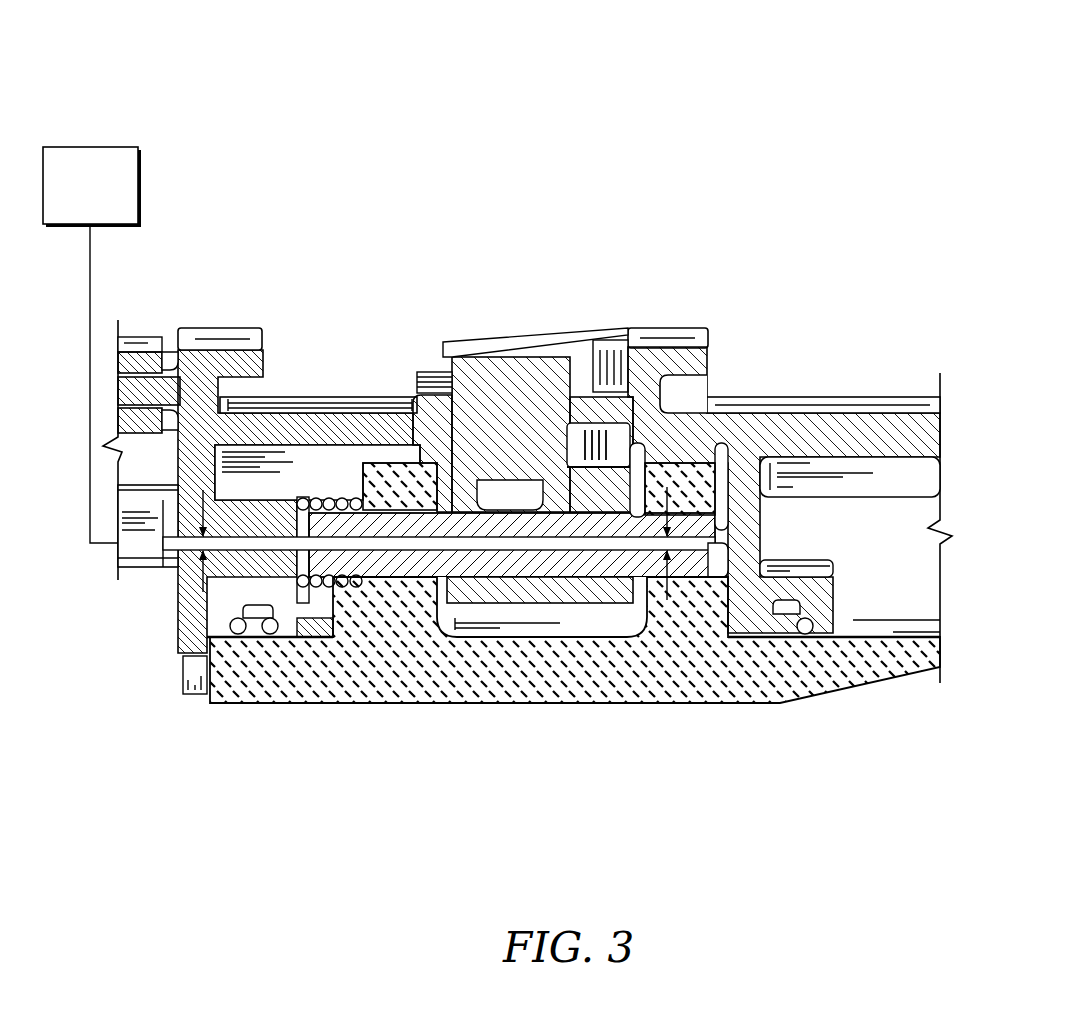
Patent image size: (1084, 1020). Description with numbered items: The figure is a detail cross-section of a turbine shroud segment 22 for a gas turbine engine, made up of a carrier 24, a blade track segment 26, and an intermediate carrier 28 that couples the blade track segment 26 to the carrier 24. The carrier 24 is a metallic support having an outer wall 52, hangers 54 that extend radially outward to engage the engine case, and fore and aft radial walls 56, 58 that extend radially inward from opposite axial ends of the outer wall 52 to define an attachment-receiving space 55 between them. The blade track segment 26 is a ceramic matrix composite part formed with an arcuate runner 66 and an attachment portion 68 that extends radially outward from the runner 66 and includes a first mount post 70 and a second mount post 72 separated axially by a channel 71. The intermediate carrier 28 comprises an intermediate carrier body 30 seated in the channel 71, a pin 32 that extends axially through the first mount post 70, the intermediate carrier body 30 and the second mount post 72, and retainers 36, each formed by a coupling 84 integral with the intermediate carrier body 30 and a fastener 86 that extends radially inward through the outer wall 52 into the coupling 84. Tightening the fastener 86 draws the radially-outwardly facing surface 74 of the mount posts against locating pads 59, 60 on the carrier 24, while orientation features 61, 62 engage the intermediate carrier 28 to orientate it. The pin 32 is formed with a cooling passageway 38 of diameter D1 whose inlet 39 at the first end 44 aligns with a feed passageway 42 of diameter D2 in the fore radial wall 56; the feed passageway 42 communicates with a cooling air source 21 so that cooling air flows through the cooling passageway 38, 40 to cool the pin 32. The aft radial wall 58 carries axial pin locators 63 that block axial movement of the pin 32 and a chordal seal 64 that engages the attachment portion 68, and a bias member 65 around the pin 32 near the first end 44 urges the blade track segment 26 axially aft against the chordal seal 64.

The cooling air source 21 is at (87, 147).
The turbine shroud segment 22 is at (206, 92).
The carrier 24 is at (262, 266).
The blade track segment 26 is at (334, 791).
The intermediate carrier 28 is at (395, 237).
The intermediate carrier body 30 is at (589, 446).
The pin 32 is at (350, 495).
The retainer 36 is at (510, 301).
The cooling passageway 38 is at (385, 552).
The inlet 39 is at (327, 545).
The cooling passageway 40 is at (693, 543).
The feed passageway 42 is at (150, 545).
The first end 44 is at (305, 496).
The outer wall 52 is at (349, 395).
The hanger 54 is at (243, 325).
The attachment-receiving space 55 is at (327, 462).
The fore radial wall 56 is at (177, 453).
The aft radial wall 58 is at (850, 490).
The locating pad 59 is at (382, 461).
The locating pad 60 is at (722, 511).
The orientation feature 61 is at (454, 368).
The orientation feature 62 is at (634, 417).
The axial pin locator 63 is at (764, 521).
The chordal seal 64 is at (714, 576).
The bias member 65 is at (363, 578).
The runner 66 is at (387, 710).
The attachment portion 68 is at (587, 781).
The first mount post 70 is at (452, 611).
The channel 71 is at (557, 628).
The second mount post 72 is at (632, 591).
The radially-outwardly facing surface 74 is at (421, 371).
The coupling 84 is at (552, 418).
The fastener 86 is at (507, 337).
The diameter of cooling passageway D1 is at (667, 560).
The diameter of feed passageway D2 is at (202, 588).